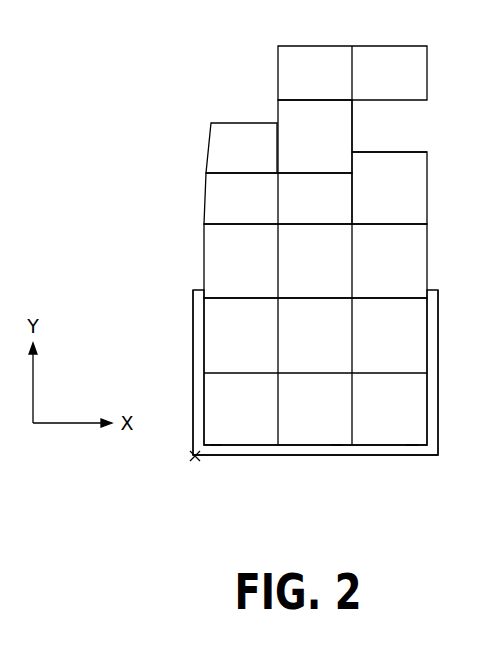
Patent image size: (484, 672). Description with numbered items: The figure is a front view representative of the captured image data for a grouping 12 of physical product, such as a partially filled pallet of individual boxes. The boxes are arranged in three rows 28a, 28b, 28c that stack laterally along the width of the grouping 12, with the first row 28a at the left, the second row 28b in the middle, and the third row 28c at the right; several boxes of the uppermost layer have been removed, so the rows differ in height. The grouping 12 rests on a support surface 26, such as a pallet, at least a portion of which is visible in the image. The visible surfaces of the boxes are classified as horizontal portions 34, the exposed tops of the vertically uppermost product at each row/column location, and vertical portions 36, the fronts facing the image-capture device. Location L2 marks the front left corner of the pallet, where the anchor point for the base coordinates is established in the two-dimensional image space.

The grouping 12 is at (134, 85).
The support surface 26 is at (263, 452).
The first row 28a is at (216, 465).
The second row 28b is at (337, 465).
The third row 28c is at (412, 465).
The horizontal portions 34 is at (401, 273).
The vertical portions 36 is at (401, 419).
The location L2 is at (182, 452).